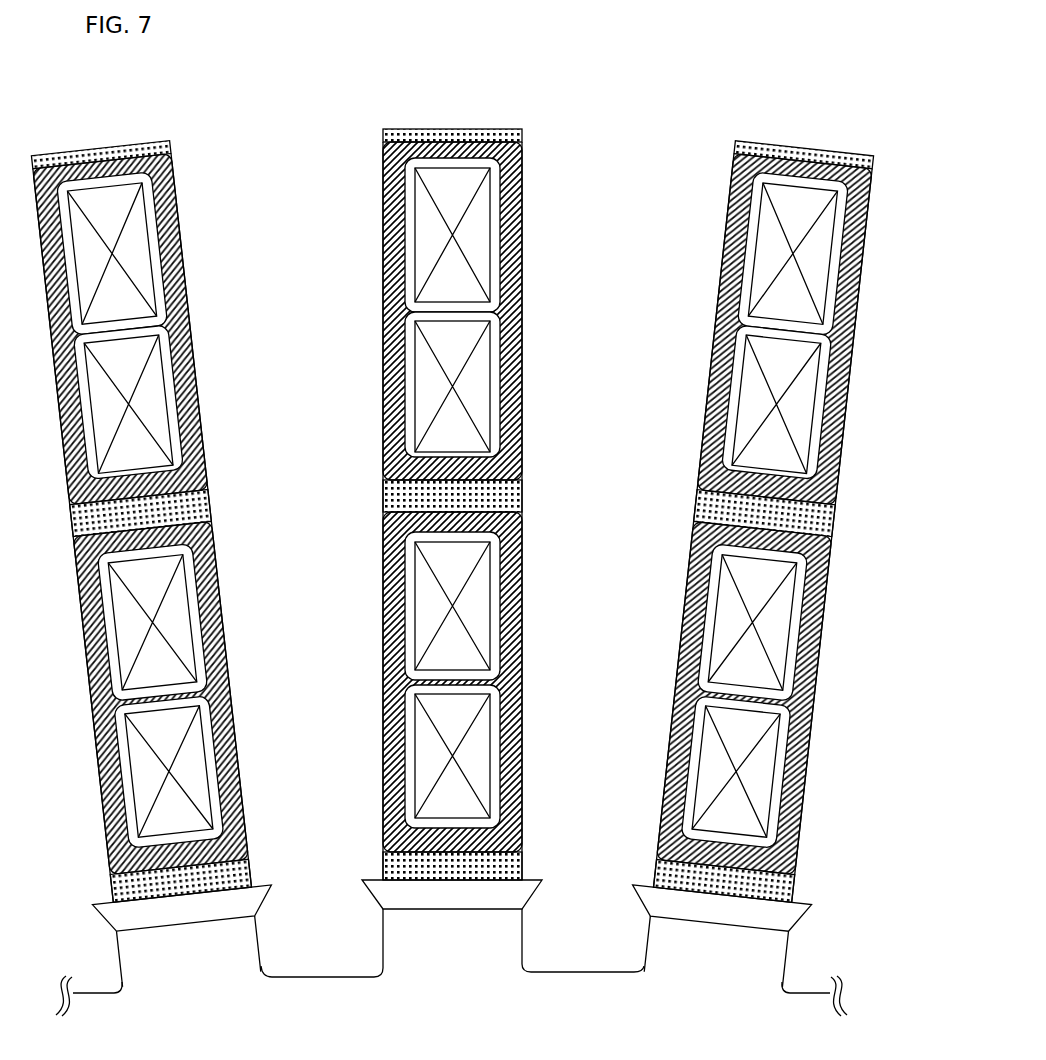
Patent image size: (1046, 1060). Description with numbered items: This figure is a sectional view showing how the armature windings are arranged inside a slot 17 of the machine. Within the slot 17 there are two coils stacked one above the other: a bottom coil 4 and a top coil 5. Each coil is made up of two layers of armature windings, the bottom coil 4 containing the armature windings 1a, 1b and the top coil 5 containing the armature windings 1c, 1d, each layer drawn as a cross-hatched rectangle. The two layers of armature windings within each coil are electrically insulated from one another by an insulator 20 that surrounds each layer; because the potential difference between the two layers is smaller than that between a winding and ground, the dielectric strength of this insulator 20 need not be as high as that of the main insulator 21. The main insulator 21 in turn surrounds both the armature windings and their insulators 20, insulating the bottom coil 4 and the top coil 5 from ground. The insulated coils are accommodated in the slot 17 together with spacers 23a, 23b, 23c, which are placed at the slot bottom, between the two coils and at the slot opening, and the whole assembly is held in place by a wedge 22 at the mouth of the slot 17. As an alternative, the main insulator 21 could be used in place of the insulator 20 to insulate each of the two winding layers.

The armature winding 1a is at (470, 243).
The armature winding 1b is at (470, 385).
The armature winding 1c is at (470, 602).
The armature winding 1d is at (470, 768).
The bottom coil 4 is at (368, 340).
The top coil 5 is at (368, 680).
The slot 17 is at (390, 948).
The insulator 20 is at (495, 718).
The main insulator 21 is at (513, 645).
The wedge 22 is at (383, 887).
The spacer 23a is at (383, 862).
The spacer 23b is at (383, 493).
The spacer 23c is at (383, 131).